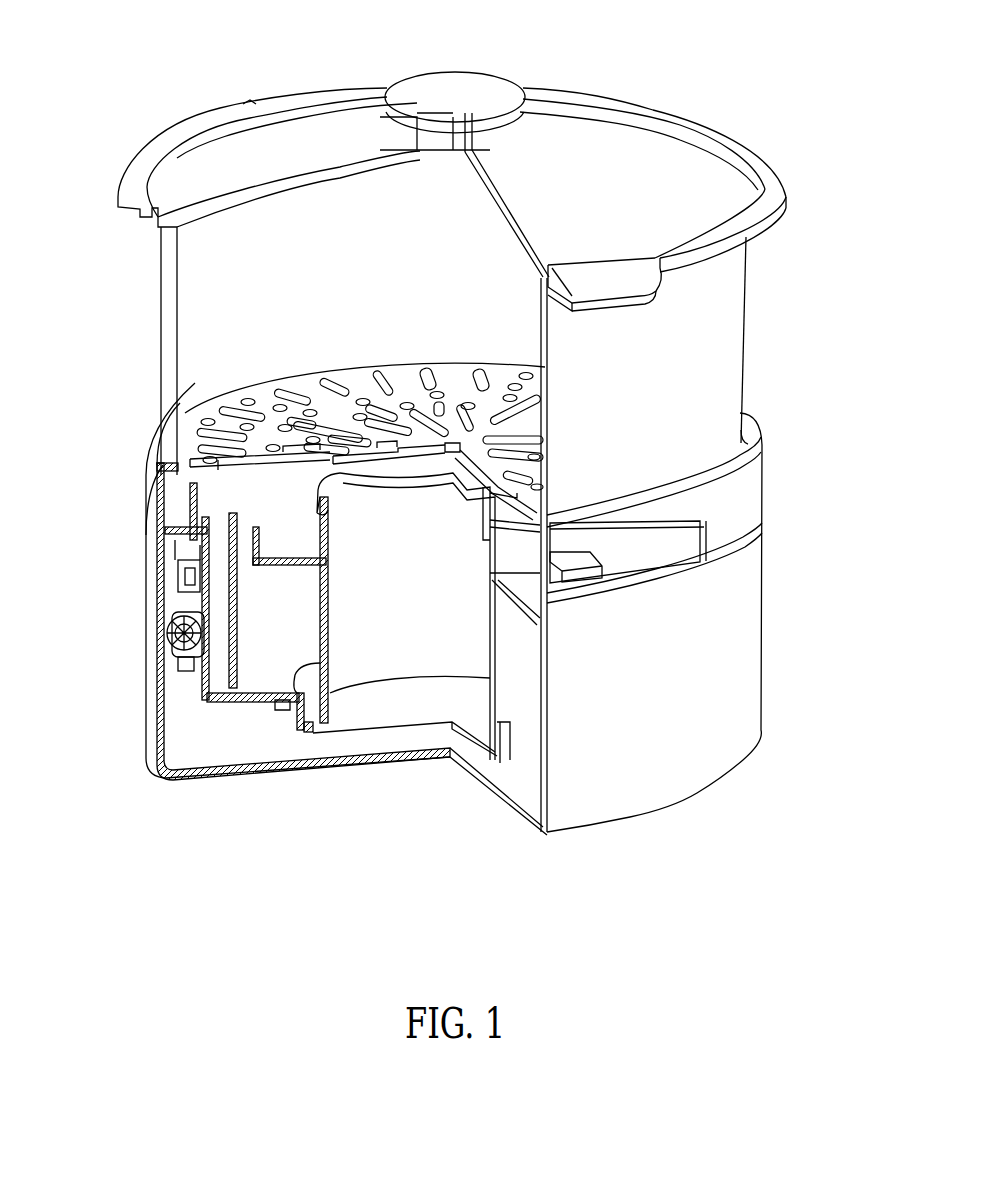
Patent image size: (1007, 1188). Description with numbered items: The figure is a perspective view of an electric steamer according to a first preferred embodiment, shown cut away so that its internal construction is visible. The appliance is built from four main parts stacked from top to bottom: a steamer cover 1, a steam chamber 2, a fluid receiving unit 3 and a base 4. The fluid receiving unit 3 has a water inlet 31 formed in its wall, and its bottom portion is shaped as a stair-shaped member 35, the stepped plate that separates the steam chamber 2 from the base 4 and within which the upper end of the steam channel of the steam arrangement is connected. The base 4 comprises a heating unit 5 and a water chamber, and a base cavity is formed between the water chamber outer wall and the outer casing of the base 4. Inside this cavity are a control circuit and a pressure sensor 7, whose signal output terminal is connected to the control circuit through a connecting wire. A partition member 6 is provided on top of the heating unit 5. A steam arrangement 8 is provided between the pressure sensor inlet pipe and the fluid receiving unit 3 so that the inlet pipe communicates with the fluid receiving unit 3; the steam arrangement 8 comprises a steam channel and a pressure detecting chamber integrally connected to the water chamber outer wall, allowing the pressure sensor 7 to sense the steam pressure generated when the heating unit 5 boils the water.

The steamer cover 1 is at (616, 174).
The steam chamber 2 is at (688, 390).
The fluid receiving unit 3 is at (735, 510).
The water inlet 31 is at (655, 560).
The base 4 is at (690, 703).
The stair-shaped member 35 is at (220, 487).
The heating unit 5 is at (418, 725).
The partition member 6 is at (336, 698).
The pressure sensor 7 is at (175, 643).
The steam arrangement 8 is at (193, 575).